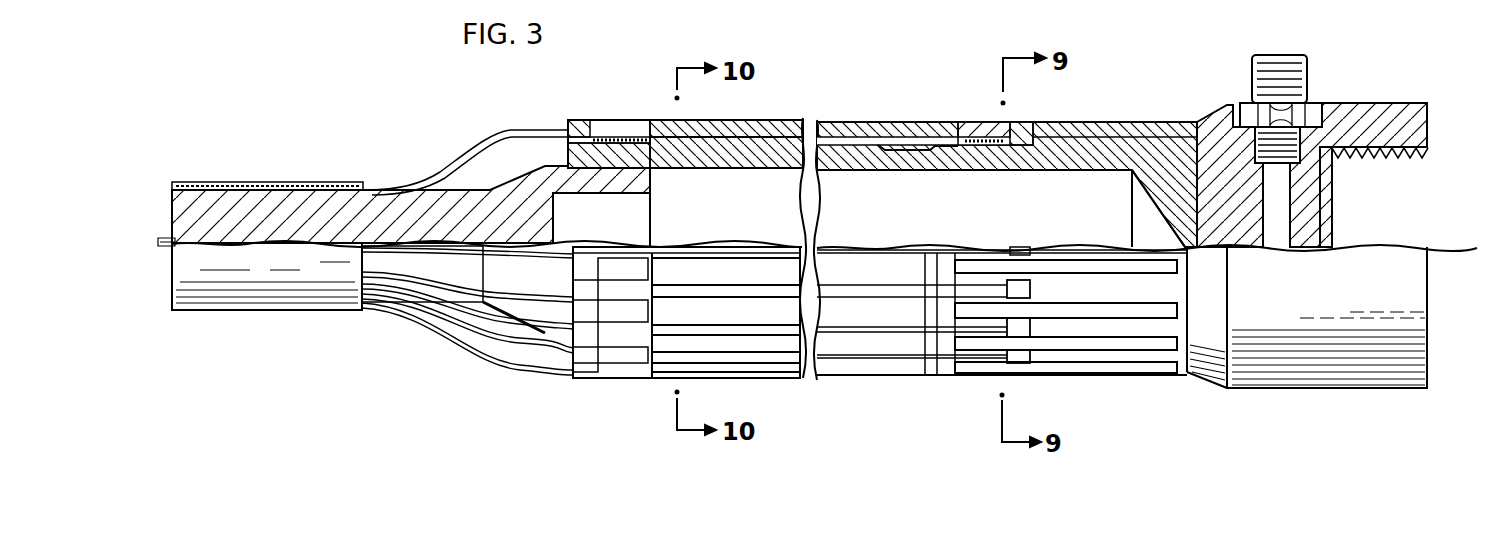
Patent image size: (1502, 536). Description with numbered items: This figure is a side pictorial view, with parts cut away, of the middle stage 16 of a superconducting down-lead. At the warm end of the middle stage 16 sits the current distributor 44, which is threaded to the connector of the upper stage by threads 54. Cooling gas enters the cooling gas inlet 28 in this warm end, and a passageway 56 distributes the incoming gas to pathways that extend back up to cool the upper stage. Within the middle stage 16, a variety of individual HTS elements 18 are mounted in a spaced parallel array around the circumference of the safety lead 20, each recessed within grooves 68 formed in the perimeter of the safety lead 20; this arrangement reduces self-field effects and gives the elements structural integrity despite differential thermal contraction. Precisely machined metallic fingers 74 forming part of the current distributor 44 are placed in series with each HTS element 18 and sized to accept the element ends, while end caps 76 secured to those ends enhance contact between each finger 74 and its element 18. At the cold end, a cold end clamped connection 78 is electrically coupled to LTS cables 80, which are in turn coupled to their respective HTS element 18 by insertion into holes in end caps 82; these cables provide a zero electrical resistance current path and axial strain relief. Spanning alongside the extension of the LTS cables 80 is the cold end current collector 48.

The middle stage 16 is at (841, 102).
The HTS elements 18 is at (750, 118).
The safety lead 20 is at (778, 165).
The cooling gas inlet 28 is at (1305, 70).
The current distributor 44 is at (1385, 372).
The cold end current collector 48 is at (478, 302).
The threads 54 is at (1398, 157).
The passageway 56 is at (1248, 248).
The grooves 68 is at (895, 148).
The fingers 74 is at (1150, 122).
The end caps 76 is at (1030, 122).
The cold end clamped connection 78 is at (300, 298).
The LTS cables 80 is at (440, 166).
The end caps 82 is at (580, 118).